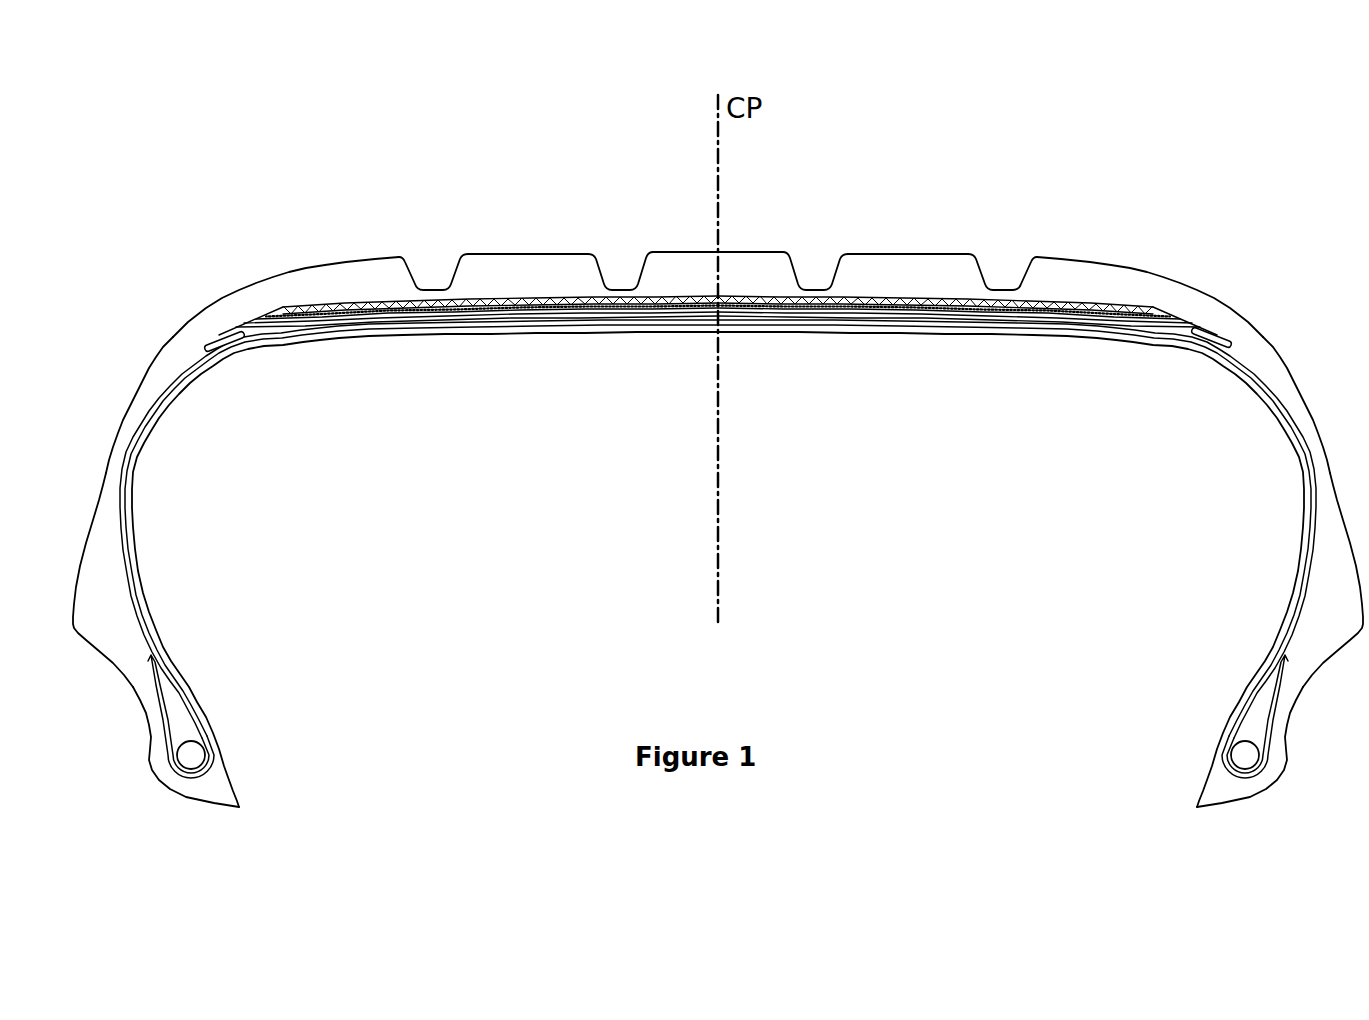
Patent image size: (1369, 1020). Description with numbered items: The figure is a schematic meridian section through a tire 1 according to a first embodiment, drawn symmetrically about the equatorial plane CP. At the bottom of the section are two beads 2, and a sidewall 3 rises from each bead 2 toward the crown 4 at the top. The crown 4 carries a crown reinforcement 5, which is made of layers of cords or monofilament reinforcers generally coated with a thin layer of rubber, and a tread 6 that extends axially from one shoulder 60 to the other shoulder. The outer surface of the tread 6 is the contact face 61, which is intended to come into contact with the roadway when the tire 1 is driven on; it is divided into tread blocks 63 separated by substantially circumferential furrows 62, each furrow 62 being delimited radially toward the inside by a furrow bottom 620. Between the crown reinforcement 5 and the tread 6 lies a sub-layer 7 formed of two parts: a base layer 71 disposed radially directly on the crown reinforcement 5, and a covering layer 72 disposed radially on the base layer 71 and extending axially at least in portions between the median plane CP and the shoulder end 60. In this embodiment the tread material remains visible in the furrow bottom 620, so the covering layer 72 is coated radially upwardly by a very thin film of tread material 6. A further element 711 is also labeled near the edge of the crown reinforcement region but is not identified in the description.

The tire 1 is at (203, 176).
The bead 2 is at (137, 730).
The sidewall 3 is at (107, 455).
The crown 4 is at (151, 338).
The crown reinforcement 5 is at (328, 331).
The tread 6 is at (683, 198).
The shoulder 60 is at (205, 288).
The contact face 61 is at (660, 254).
The furrow 62 is at (623, 270).
The furrow bottom 620 is at (431, 288).
The tread block 63 is at (499, 282).
The sub-layer 7 is at (583, 314).
The base layer 71 is at (676, 311).
The covering layer 72 is at (468, 307).
The belt edge cushion 711 is at (252, 337).